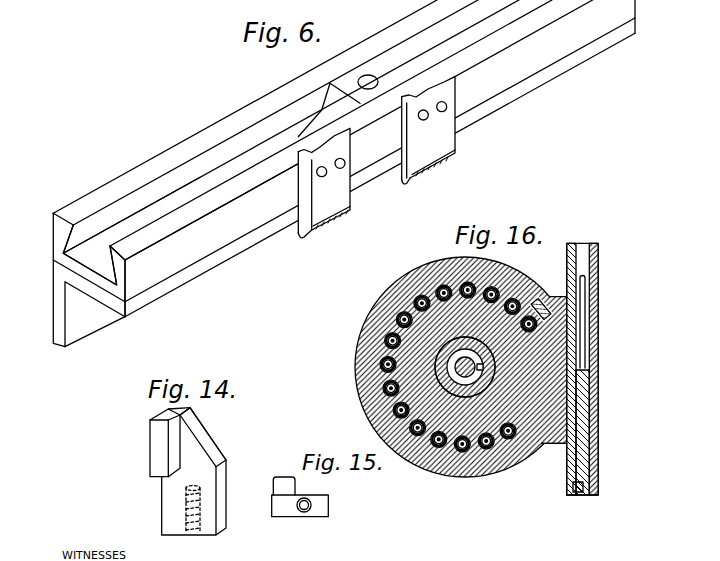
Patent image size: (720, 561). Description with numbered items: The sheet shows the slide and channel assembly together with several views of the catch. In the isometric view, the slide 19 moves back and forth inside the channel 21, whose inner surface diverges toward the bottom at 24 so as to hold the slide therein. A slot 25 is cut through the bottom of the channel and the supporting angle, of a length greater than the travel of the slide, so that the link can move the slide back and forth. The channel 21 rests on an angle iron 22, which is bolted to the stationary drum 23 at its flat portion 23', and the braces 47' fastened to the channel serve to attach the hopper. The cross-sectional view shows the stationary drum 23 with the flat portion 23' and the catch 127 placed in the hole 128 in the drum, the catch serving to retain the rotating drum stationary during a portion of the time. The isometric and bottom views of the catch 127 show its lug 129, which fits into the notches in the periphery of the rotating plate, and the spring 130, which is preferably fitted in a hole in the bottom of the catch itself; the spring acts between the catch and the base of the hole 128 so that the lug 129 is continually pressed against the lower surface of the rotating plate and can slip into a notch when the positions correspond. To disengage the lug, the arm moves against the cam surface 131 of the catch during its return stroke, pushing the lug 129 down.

In FIG. 6, the slide 19 is at (487, 25).
In FIG. 16, the slide 19 is at (580, 465).
In FIG. 6, the channel 21 is at (145, 285).
In FIG. 16, the channel 21 is at (598, 343).
In FIG. 6, the angle iron 22 is at (58, 327).
In FIG. 6, the diverging inner surface of channel 24 is at (118, 288).
In FIG. 6, the slot 25 is at (313, 127).
In FIG. 6, the braces 47' is at (420, 157).
In FIG. 16, the stationary drum 23 is at (465, 387).
In FIG. 16, the flat portion of stationary drum 23' is at (563, 488).
In FIG. 16, the catch 127 is at (541, 297).
In FIG. 14, the catch 127 is at (168, 490).
In FIG. 15, the catch 127 is at (328, 505).
In FIG. 16, the hole 128 is at (585, 313).
In FIG. 14, the lug 129 is at (155, 450).
In FIG. 15, the lug 129 is at (273, 488).
In FIG. 14, the spring 130 is at (186, 533).
In FIG. 15, the spring 130 is at (308, 512).
In FIG. 14, the cam surface 131 is at (212, 440).